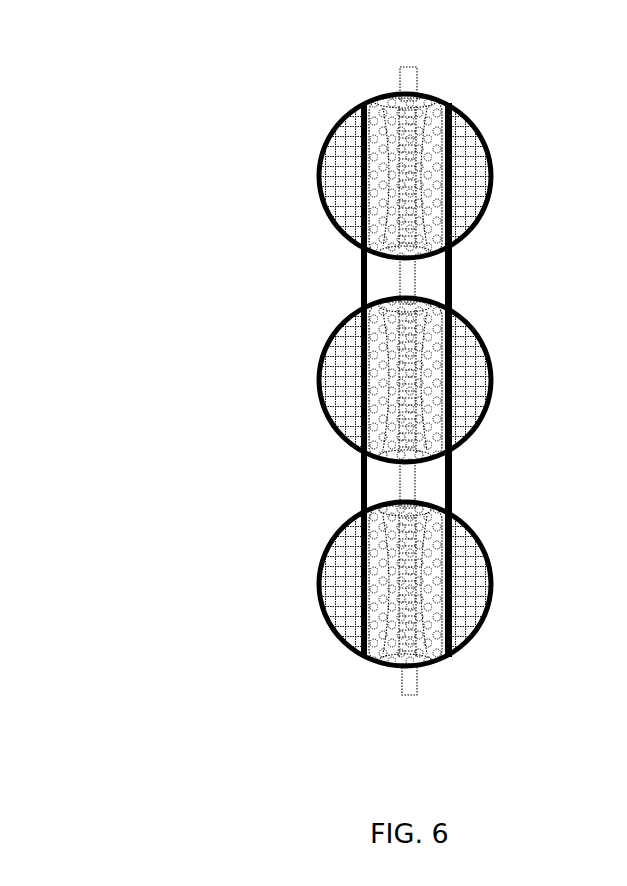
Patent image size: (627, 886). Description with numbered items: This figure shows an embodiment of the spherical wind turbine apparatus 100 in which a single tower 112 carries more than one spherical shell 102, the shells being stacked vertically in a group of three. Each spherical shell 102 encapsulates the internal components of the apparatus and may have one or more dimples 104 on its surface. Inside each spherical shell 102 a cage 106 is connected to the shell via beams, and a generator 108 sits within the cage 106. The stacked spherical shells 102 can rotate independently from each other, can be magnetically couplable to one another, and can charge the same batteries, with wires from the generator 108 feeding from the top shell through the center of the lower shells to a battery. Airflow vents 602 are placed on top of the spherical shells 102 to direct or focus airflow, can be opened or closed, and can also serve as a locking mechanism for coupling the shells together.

The spherical wind turbine apparatus 100 is at (133, 71).
The spherical shell 102 is at (437, 100).
The dimple 104 is at (377, 632).
The cage 106 is at (423, 662).
The generator 108 is at (405, 108).
The tower 112 is at (413, 271).
The airflow vent 602 is at (493, 388).